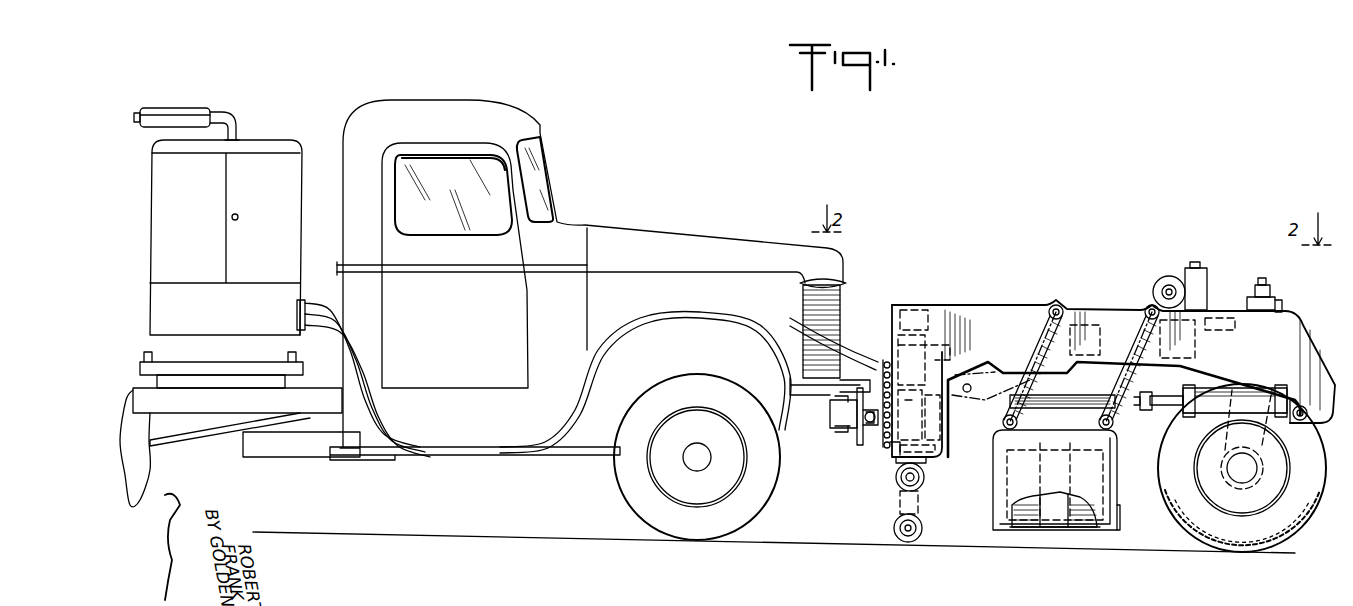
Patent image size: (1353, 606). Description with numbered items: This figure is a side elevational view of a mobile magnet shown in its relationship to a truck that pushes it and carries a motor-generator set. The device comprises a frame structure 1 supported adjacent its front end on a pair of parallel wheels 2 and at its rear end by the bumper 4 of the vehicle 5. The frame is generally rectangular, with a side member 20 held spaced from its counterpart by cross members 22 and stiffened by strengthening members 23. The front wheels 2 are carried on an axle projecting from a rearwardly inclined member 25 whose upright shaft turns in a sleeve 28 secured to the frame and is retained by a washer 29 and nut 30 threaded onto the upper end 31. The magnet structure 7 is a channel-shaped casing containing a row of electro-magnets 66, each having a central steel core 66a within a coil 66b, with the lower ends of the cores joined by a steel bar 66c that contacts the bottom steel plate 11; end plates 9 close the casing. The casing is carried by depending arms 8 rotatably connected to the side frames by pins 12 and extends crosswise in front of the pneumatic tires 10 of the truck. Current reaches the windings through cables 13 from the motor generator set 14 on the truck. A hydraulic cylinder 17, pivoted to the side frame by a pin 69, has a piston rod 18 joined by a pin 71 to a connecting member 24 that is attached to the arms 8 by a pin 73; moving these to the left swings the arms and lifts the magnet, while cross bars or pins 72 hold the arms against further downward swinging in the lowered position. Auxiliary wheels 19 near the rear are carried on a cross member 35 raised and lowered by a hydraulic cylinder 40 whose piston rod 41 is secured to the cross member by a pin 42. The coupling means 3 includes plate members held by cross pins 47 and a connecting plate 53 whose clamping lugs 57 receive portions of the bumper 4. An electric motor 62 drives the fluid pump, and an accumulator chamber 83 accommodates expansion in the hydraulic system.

The frame structure 1 is at (997, 299).
The wheels 2 is at (1298, 531).
The coupling means 3 is at (884, 362).
The bumper 4 is at (843, 414).
The vehicle 5 is at (619, 218).
The magnet structure 7 is at (1129, 519).
The depending arms 8 is at (1025, 390).
The end plates 9 is at (1105, 478).
The pneumatic tires 10 is at (635, 478).
The bottom steel plate 11 is at (1020, 527).
The pins 12 is at (1060, 305).
The cables 13 is at (580, 370).
The motor generator set 14 is at (286, 147).
The hydraulic cylinder 17 is at (1200, 417).
The piston rods 18 is at (1166, 410).
The auxiliary wheels 19 is at (898, 477).
The side member 20 is at (1308, 352).
The cross members 22 is at (935, 410).
The strengthening members 23 is at (1100, 305).
The connecting members 24 is at (1080, 408).
The rearwardly inclined member 25 is at (1270, 470).
The sleeve 28 is at (1282, 308).
The washer 29 is at (1277, 296).
The nut 30 is at (1250, 295).
The upper end 31 is at (1264, 283).
The cross member 35 is at (895, 456).
The hydraulic cylinder 40 is at (912, 328).
The piston rod 41 is at (900, 503).
The pin 42 is at (890, 448).
The cross pins 47 is at (905, 408).
The connecting plate 53 is at (848, 386).
The clamping lugs 57 is at (836, 405).
The electric motor 62 is at (1170, 280).
The electro-magnets 66 is at (1027, 493).
The central steel core 66a is at (1067, 530).
The coil 66b is at (1088, 530).
The steel bar 66c is at (1036, 530).
The pins 69 is at (1300, 420).
The pins 71 is at (1150, 404).
The cross bars or pins 72 is at (1078, 348).
The pins 73 is at (1005, 400).
The accumulator chamber 83 is at (1200, 275).